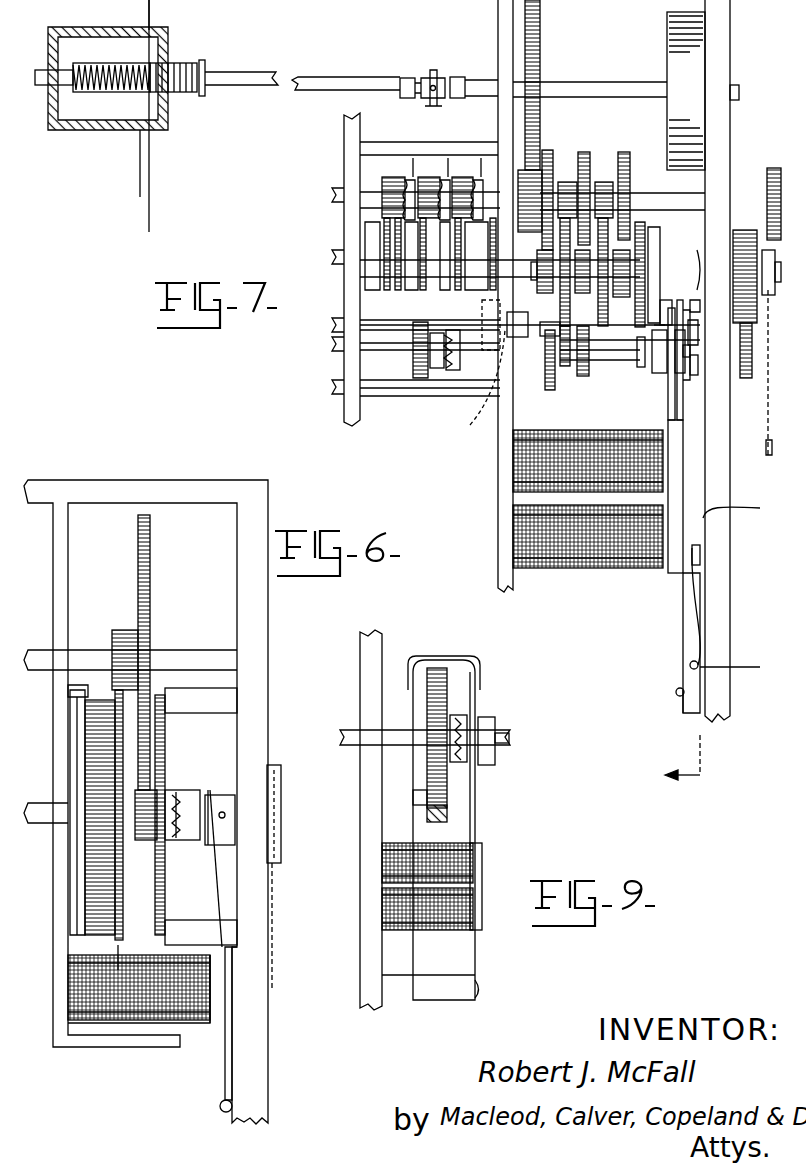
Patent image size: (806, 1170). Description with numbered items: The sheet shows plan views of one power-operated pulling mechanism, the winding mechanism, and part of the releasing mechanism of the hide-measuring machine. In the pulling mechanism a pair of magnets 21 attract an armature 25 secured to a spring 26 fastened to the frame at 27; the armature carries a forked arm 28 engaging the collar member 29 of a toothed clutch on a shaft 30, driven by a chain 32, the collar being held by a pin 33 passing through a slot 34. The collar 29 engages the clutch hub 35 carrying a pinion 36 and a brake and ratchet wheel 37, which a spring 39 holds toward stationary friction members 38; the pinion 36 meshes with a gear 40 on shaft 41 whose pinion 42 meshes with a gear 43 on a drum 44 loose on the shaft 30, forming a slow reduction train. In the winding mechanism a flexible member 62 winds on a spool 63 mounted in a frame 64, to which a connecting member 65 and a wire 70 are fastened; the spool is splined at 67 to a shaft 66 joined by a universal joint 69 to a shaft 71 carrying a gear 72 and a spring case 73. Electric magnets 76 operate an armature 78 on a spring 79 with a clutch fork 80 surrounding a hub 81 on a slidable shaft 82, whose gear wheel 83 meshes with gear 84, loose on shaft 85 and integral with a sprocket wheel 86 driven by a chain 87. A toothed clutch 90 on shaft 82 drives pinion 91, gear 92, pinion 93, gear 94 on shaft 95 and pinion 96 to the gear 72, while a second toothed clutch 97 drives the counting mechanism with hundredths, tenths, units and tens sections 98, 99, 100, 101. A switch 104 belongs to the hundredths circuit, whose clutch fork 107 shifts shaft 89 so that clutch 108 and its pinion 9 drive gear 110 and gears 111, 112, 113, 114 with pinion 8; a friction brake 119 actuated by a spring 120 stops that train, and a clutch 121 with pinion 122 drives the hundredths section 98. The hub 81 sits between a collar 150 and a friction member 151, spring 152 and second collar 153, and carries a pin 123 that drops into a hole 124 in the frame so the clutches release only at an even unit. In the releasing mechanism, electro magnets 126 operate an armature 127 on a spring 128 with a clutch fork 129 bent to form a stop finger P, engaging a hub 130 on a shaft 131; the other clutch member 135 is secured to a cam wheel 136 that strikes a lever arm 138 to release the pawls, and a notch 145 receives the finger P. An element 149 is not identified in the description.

In FIG. 7, the pinion 8 is at (682, 768).
In FIG. 7, the pinion 9 is at (632, 328).
In FIG. 6, the pair of magnets 21 is at (139, 987).
In FIG. 6, the armature 25 is at (220, 1030).
In FIG. 6, the spring 26 is at (226, 1070).
In FIG. 6, the frame fastening 27 is at (222, 1110).
In FIG. 6, the forked arm 28 is at (208, 790).
In FIG. 6, the collar member 29 is at (225, 795).
In FIG. 6, the shaft 30 is at (36, 802).
In FIG. 6, the chain 32 is at (274, 930).
In FIG. 6, the pin 33 is at (230, 845).
In FIG. 6, the slot 34 is at (228, 815).
In FIG. 6, the clutch hub 35 is at (176, 842).
In FIG. 6, the pinion 36 is at (146, 842).
In FIG. 6, the brake and ratchet wheel 37 is at (166, 738).
In FIG. 6, the stationary friction members 38 is at (170, 688).
In FIG. 6, the spring 39 is at (85, 850).
In FIG. 6, the gear 40 is at (151, 575).
In FIG. 6, the shaft 41 is at (212, 650).
In FIG. 6, the pinion 42 is at (125, 630).
In FIG. 6, the gear 43 is at (114, 967).
In FIG. 6, the drum 44 is at (92, 738).
In FIG. 7, the flexible member 62 is at (151, 186).
In FIG. 7, the spool 63 is at (179, 66).
In FIG. 7, the frame 64 is at (88, 130).
In FIG. 7, the connecting member 65 is at (148, 6).
In FIG. 7, the shaft 66 is at (337, 68).
In FIG. 7, the spline 67 is at (219, 72).
In FIG. 7, the universal joint 69 is at (433, 72).
In FIG. 7, the wire 70 is at (139, 155).
In FIG. 7, the shaft 71 is at (585, 82).
In FIG. 7, the gear 72 is at (541, 58).
In FIG. 7, the spring case 73 is at (666, 30).
In FIG. 7, the electric magnets 76 is at (588, 499).
In FIG. 7, the armature 78 is at (670, 573).
In FIG. 7, the spring 79 is at (683, 668).
In FIG. 7, the clutch fork 80 is at (686, 428).
In FIG. 7, the clutch hub 81 is at (678, 420).
In FIG. 7, the shaft 82 is at (332, 344).
In FIG. 7, the gear wheel 83 is at (752, 372).
In FIG. 7, the gear 84 is at (755, 312).
In FIG. 7, the shaft 85 is at (332, 258).
In FIG. 7, the sprocket wheel 86 is at (774, 272).
In FIG. 7, the chain 87 is at (777, 374).
In FIG. 7, the shaft 89 is at (332, 322).
In FIG. 7, the toothed clutch 90 is at (592, 360).
In FIG. 7, the pinion 91 is at (552, 372).
In FIG. 7, the gear 92 is at (540, 336).
In FIG. 7, the pinion 93 is at (556, 312).
In FIG. 7, the gear 94 is at (552, 150).
In FIG. 7, the shaft 95 is at (332, 192).
In FIG. 7, the pinion 96 is at (520, 172).
In FIG. 7, the toothed clutch 97 is at (458, 368).
In FIG. 7, the hundredths section 98 is at (482, 254).
In FIG. 7, the tenths section 99 is at (449, 254).
In FIG. 7, the units section 100 is at (412, 254).
In FIG. 7, the tens section 101 is at (382, 254).
In FIG. 7, the switch 104 is at (700, 560).
In FIG. 7, the clutch fork 107 is at (692, 305).
In FIG. 7, the clutch 108 is at (662, 310).
In FIG. 7, the gear 110 is at (641, 224).
In FIG. 7, the gear 111 is at (624, 152).
In FIG. 7, the gear 112 is at (614, 214).
In FIG. 7, the gear 113 is at (596, 144).
In FIG. 7, the gear 114 is at (548, 250).
In FIG. 7, the friction brake 119 is at (660, 250).
In FIG. 7, the spring 120 is at (718, 232).
In FIG. 7, the clutch 121 is at (480, 373).
In FIG. 7, the pinion 122 is at (470, 388).
In FIG. 7, the pin 123 is at (700, 365).
In FIG. 7, the hole 124 is at (700, 340).
In FIG. 9, the electro magnets 126 is at (427, 886).
In FIG. 9, the armature 127 is at (480, 860).
In FIG. 9, the spring 128 is at (476, 968).
In FIG. 9, the clutch fork 129 is at (473, 790).
In FIG. 9, the hub 130 is at (488, 718).
In FIG. 9, the shaft 131 is at (498, 736).
In FIG. 9, the clutch member 135 is at (458, 718).
In FIG. 9, the wheel 136 is at (440, 676).
In FIG. 9, the lever arm 138 is at (428, 822).
In FIG. 9, the notch 145 is at (418, 795).
In FIG. 7, the gear 149 is at (772, 167).
In FIG. 7, the collar 150 is at (690, 352).
In FIG. 7, the friction member 151 is at (678, 376).
In FIG. 7, the spring 152 is at (657, 376).
In FIG. 7, the second collar 153 is at (640, 370).
In FIG. 9, the stop finger P is at (410, 665).